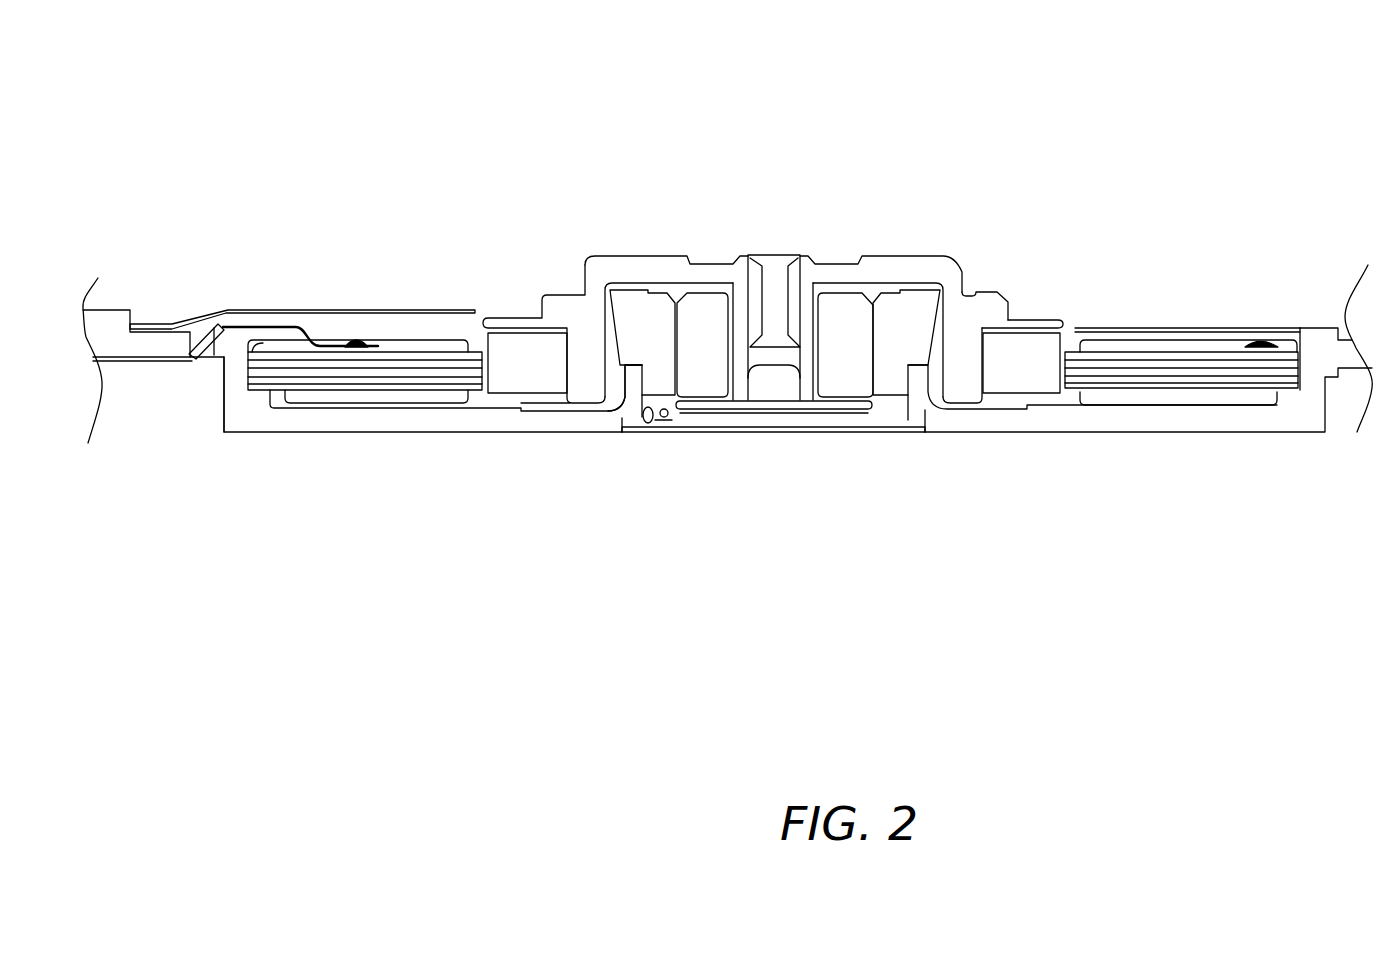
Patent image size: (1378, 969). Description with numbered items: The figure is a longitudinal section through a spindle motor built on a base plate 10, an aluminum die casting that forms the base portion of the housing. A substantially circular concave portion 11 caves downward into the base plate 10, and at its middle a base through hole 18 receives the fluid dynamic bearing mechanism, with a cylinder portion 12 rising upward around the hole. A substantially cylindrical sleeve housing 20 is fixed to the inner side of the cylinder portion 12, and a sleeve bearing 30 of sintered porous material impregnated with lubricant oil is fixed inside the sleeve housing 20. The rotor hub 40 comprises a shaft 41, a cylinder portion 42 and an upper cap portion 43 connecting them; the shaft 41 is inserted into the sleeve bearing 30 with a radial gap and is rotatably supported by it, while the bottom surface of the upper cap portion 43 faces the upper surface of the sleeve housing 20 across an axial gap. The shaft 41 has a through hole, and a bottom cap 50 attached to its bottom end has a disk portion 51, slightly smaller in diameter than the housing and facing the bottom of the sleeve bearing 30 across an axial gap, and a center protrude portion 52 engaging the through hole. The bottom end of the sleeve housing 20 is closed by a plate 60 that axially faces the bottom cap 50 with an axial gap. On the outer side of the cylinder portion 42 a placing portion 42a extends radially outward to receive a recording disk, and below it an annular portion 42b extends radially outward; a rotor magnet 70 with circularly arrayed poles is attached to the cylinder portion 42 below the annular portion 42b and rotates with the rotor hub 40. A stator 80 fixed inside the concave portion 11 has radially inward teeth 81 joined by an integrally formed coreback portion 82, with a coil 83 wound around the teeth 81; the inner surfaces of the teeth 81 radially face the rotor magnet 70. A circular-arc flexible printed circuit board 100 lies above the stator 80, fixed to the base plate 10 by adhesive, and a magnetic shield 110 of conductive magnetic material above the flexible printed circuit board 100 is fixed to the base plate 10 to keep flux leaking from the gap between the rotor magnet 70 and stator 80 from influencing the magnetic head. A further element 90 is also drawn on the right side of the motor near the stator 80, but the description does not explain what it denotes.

The base plate 10 is at (727, 458).
The concave portion 11 is at (238, 375).
The cylinder portion 12 is at (630, 400).
The base through hole 18 is at (650, 408).
The sleeve housing 20 is at (897, 387).
The sleeve bearing 30 is at (698, 370).
The rotor hub 40 is at (780, 205).
The shaft 41 is at (808, 312).
The cylinder portion 42 is at (587, 348).
The placing portion 42a is at (987, 287).
The annular portion 42b is at (1040, 323).
The upper cap portion 43 is at (648, 272).
The bottom cap 50 is at (793, 417).
The disk portion 51 is at (773, 388).
The center protrude portion 52 is at (837, 405).
The plate 60 is at (713, 418).
The rotor magnet 70 is at (1020, 370).
The stator 80 is at (1198, 381).
The teeth 81 is at (1280, 373).
The coreback portion 82 is at (1142, 367).
The coil 83 is at (1208, 395).
The terminal plate 90 is at (1270, 345).
The flexible printed circuit board 100 is at (358, 347).
The magnetic shield 110 is at (402, 312).